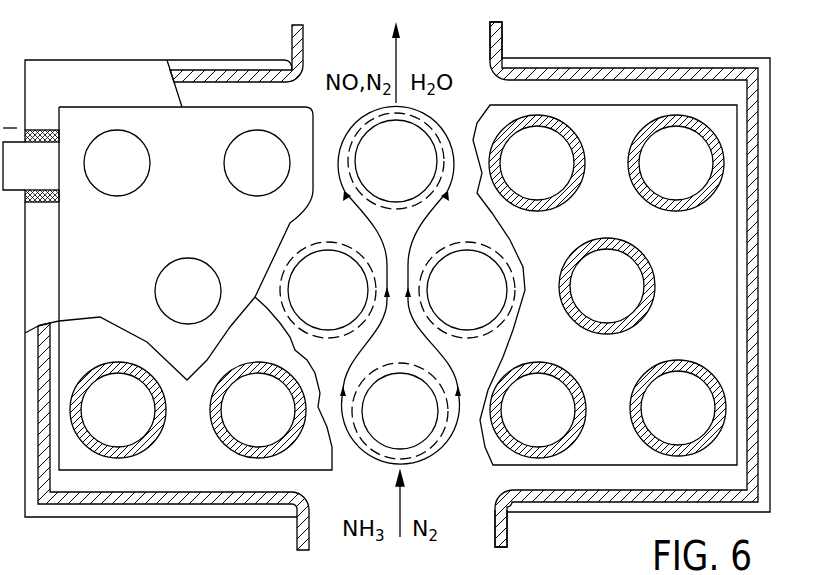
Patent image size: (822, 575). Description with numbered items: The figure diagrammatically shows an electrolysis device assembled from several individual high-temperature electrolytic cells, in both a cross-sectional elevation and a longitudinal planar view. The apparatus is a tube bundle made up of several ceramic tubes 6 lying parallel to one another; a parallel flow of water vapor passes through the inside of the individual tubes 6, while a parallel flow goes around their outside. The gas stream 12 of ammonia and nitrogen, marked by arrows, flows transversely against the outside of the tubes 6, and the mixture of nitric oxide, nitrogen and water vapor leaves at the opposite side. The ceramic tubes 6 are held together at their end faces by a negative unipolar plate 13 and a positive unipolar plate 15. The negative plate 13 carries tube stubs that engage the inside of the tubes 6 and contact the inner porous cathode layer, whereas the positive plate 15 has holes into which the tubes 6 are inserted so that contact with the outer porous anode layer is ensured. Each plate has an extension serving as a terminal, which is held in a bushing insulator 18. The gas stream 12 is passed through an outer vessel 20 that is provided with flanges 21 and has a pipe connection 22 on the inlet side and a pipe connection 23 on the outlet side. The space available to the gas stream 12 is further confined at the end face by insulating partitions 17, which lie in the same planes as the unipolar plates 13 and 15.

The ceramic tube 6 is at (222, 443).
The stream of NH3/N2 gas 12 is at (398, 495).
The negative unipolar plate 13 is at (268, 106).
The positive unipolar plate 15 is at (570, 466).
The insulating partition 17 is at (60, 237).
The bushing insulator 18 is at (42, 129).
The outer vessel 20 is at (58, 497).
The flange 21 is at (98, 518).
The pipe connection 22 is at (503, 533).
The pipe connection 23 is at (503, 31).